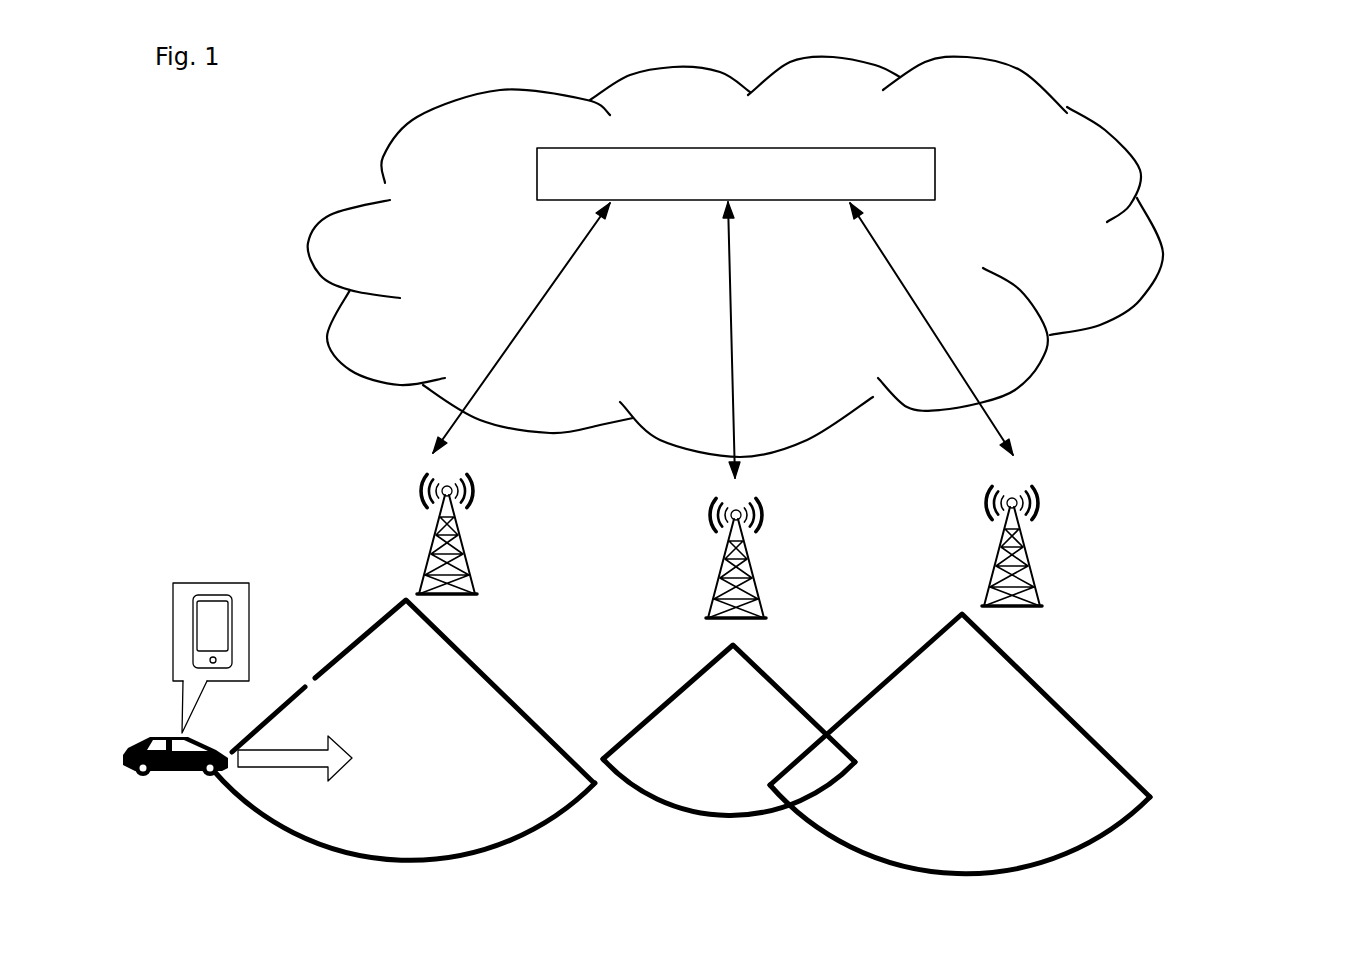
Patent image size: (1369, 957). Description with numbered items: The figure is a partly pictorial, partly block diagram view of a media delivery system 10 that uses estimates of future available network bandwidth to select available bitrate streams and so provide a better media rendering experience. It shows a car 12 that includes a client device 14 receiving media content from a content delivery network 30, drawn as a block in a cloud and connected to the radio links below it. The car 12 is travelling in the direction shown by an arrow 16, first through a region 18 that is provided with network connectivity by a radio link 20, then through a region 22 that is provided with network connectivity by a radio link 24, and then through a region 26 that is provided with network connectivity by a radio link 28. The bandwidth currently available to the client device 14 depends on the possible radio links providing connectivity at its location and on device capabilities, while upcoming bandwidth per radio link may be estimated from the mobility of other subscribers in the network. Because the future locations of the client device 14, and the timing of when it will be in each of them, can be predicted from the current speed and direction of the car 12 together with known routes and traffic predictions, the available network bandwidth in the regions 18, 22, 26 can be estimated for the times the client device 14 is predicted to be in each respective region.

The media delivery system 10 is at (1270, 245).
The car 12 is at (180, 770).
The client device 14 is at (213, 592).
The arrow 16 is at (306, 750).
The region 18 is at (496, 641).
The radio link 20 is at (467, 556).
The region 22 is at (789, 692).
The radio link 24 is at (752, 572).
The region 26 is at (1110, 717).
The radio link 28 is at (1030, 555).
The content delivery network 30 is at (536, 172).